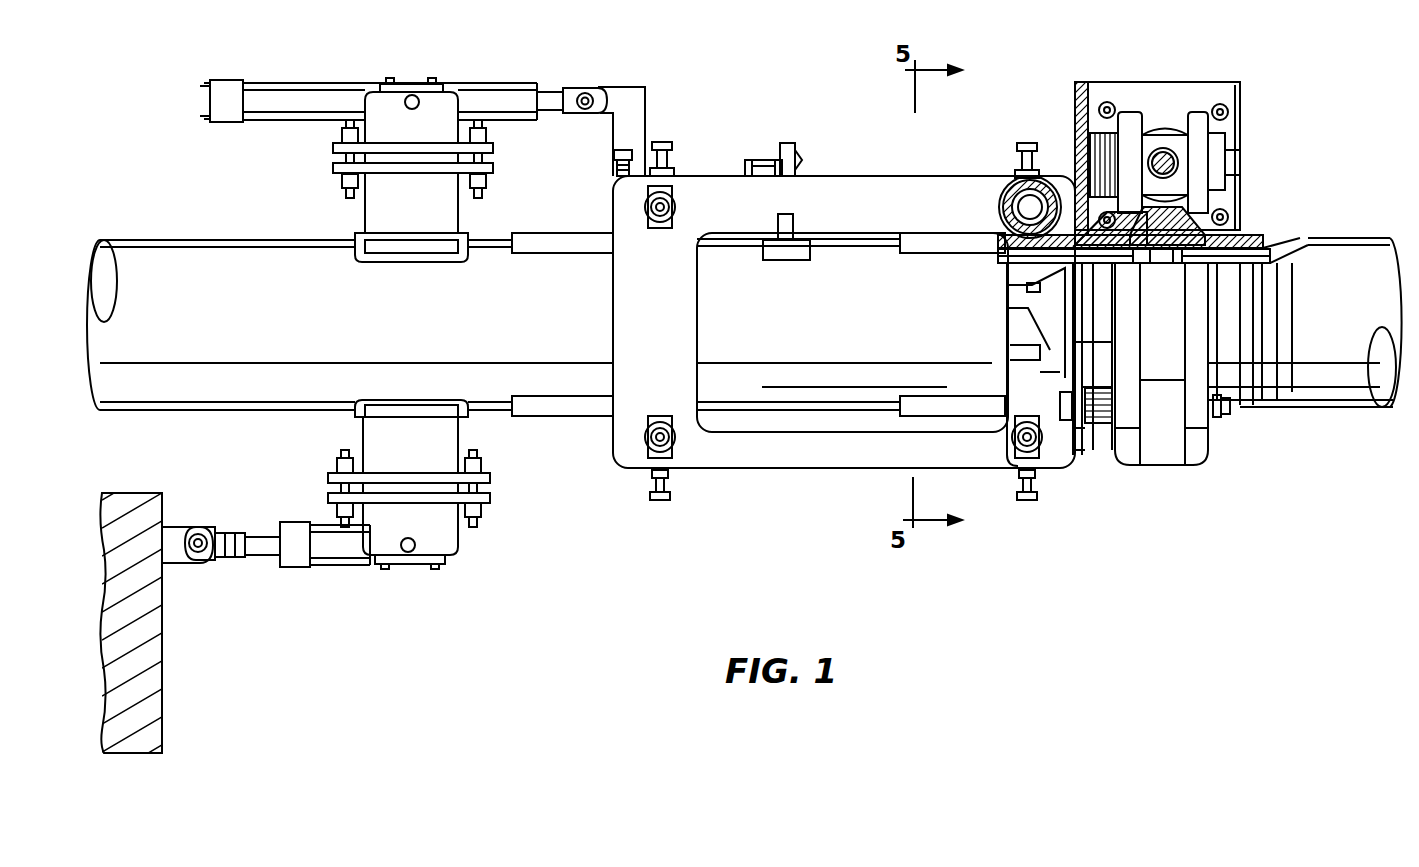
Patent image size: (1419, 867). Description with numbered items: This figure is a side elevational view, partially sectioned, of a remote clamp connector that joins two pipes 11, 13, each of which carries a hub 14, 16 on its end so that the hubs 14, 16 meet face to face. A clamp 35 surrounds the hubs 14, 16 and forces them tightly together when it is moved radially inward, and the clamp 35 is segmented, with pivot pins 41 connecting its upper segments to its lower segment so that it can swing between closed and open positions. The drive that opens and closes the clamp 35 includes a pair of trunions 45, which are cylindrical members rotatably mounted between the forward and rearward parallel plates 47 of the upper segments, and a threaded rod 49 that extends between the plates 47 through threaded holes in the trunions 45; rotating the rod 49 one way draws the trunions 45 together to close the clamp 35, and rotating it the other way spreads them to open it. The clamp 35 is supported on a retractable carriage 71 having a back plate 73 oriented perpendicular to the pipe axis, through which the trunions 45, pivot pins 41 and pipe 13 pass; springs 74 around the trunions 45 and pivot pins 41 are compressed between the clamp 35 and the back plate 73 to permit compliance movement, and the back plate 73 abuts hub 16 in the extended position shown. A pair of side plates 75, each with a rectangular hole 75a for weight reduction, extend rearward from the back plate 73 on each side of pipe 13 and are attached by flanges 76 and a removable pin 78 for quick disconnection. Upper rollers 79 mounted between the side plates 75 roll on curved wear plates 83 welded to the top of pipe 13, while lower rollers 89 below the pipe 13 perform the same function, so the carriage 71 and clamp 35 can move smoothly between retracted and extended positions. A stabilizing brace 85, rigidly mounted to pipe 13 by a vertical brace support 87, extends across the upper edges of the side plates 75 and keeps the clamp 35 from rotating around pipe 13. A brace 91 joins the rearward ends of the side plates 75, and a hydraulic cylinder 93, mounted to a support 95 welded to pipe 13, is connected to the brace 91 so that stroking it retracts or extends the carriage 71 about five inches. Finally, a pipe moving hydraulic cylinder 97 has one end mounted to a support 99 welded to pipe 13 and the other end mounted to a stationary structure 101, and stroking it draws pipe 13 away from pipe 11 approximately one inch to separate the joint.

The pipe 11 is at (1353, 255).
The pipe 13 is at (288, 258).
The hub 14 is at (1247, 233).
The hub 16 is at (1040, 255).
The clamp 35 is at (1204, 98).
The pivot pins 41 is at (1222, 413).
The trunions 45 is at (1150, 135).
The parallel plates 47 is at (1128, 112).
The threaded rod 49 is at (1178, 162).
The retractable carriage 71 is at (969, 158).
The back plate 73 is at (1085, 82).
The springs 74 is at (1084, 130).
The side plates 75 is at (740, 463).
The rectangular hole 75a is at (700, 273).
The flanges 76 is at (1013, 340).
The pin 78 is at (1045, 365).
The upper rollers 79 is at (1008, 175).
The wear plate 83 is at (913, 240).
The stabilizing brace 85 is at (756, 158).
The vertical brace support 87 is at (793, 158).
The lower rollers 89 is at (675, 423).
The brace 91 is at (617, 167).
The hydraulic cylinder 93 is at (486, 100).
The support 95 is at (442, 213).
The pipe moving hydraulic cylinder 97 is at (263, 540).
The support 99 is at (377, 432).
The stationary structure 101 is at (153, 632).